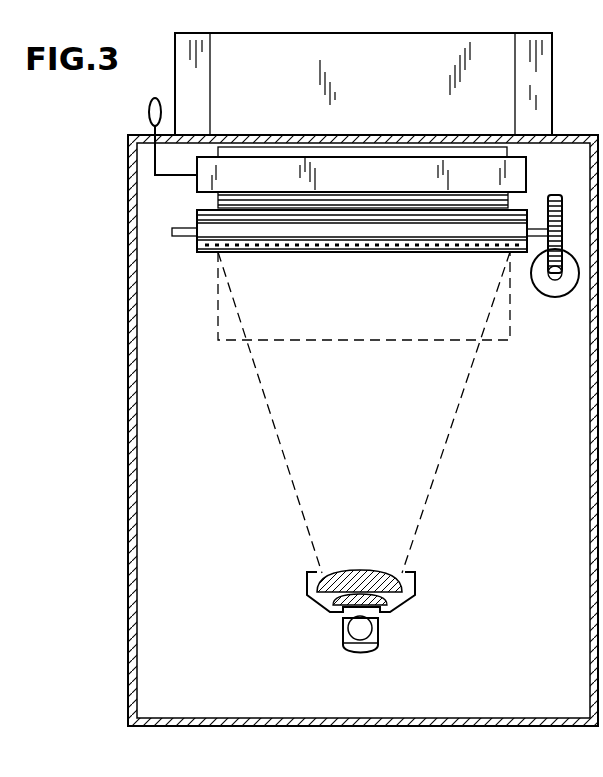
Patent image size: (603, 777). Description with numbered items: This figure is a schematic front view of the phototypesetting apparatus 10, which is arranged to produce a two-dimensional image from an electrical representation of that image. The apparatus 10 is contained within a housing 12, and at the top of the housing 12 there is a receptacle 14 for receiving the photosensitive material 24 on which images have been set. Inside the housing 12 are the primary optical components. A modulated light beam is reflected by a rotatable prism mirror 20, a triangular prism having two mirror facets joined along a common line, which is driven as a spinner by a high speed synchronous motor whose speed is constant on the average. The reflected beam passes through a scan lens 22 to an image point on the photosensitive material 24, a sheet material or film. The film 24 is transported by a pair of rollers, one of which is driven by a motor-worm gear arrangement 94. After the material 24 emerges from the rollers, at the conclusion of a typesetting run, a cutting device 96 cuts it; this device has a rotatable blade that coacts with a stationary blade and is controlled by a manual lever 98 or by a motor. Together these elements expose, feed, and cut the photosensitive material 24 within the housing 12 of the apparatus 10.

The phototypesetting apparatus 10 is at (237, 465).
The housing 12 is at (128, 382).
The receptacle 14 is at (553, 82).
The rotatable prism mirror 20 is at (390, 636).
The scan lens 22 is at (418, 571).
The photosensitive material 24 is at (507, 152).
The motor-worm gear arrangement 94 is at (546, 302).
The cutting device 96 is at (194, 182).
The manual lever 98 is at (148, 116).